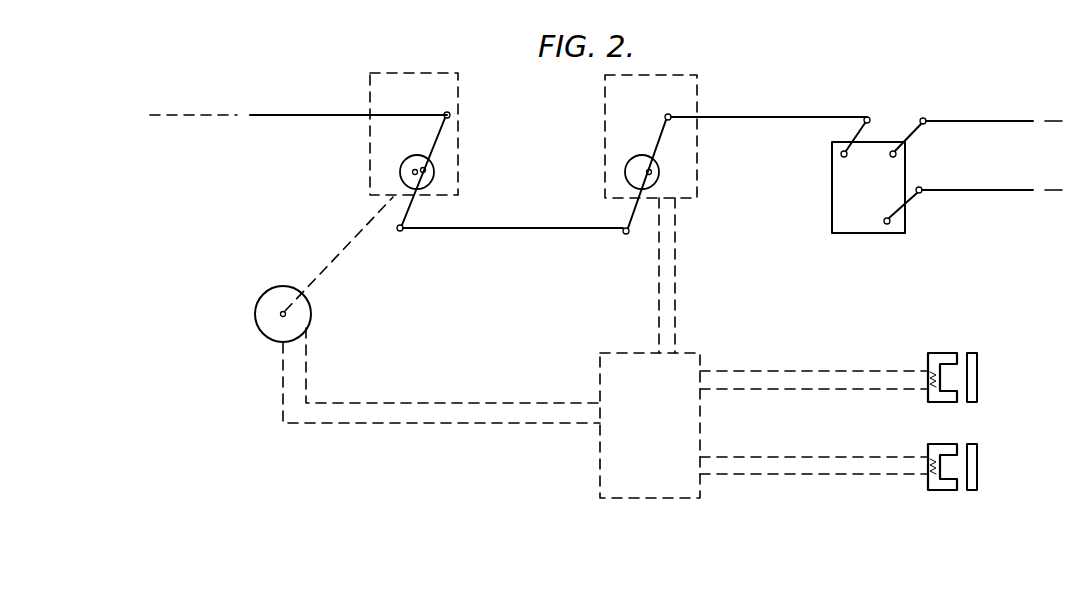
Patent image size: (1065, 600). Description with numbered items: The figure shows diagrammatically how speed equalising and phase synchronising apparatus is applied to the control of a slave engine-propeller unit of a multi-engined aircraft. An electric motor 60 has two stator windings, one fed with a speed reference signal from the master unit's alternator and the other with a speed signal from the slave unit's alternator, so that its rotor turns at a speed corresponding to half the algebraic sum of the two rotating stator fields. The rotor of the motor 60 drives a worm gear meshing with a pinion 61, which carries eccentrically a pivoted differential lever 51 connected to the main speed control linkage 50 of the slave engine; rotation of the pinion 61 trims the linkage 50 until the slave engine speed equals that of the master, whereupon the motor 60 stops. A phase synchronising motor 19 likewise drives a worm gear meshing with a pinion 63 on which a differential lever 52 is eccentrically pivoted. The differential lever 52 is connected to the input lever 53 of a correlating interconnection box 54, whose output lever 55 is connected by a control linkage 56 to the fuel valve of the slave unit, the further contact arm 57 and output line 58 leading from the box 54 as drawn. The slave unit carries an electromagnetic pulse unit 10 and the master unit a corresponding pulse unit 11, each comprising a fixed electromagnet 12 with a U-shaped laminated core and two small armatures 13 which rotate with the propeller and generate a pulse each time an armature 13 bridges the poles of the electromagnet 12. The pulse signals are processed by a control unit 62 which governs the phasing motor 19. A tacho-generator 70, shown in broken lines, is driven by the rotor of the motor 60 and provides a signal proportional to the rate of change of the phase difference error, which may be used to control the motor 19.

The electromagnetic pulse unit 10 is at (988, 383).
The electromagnetic pulse unit 11 is at (995, 467).
The electromagnet 12 is at (945, 353).
The armature 13 is at (973, 392).
The motor 19 is at (687, 93).
The main speed control linkage 50 is at (260, 112).
The differential lever 51 is at (437, 147).
The differential lever 52 is at (660, 142).
The input lever 53 is at (875, 120).
The correlating interconnection box 54 is at (845, 204).
The output lever 55 is at (913, 131).
The control linkage 56 is at (965, 118).
The relay contact arm 57 is at (910, 202).
The output line 58 is at (957, 188).
The electric motor 60 is at (442, 93).
The pinion 61 is at (398, 173).
The control unit 62 is at (683, 430).
The pinion 63 is at (627, 168).
The tacho-generator 70 is at (265, 323).